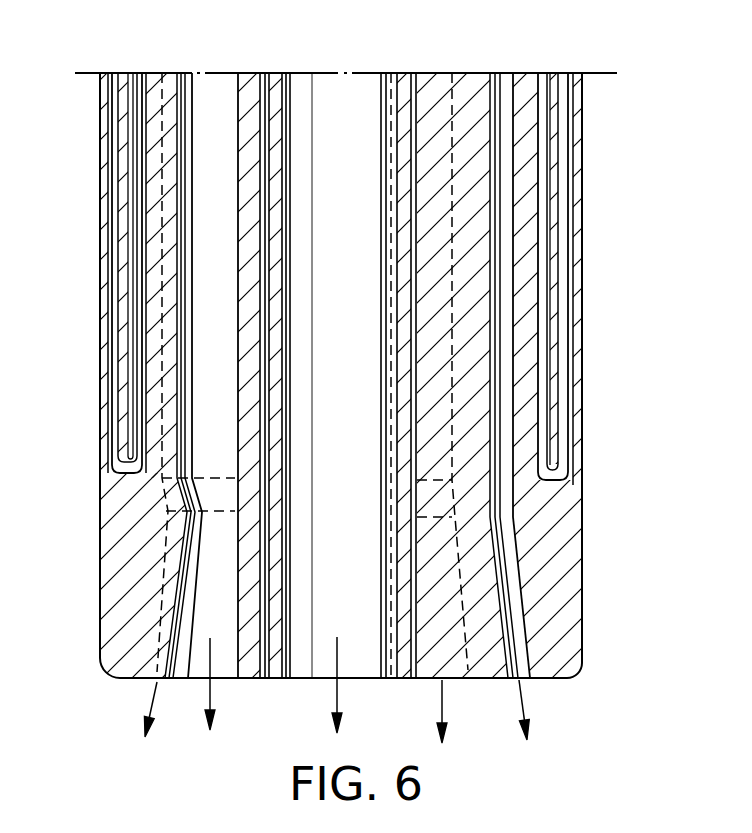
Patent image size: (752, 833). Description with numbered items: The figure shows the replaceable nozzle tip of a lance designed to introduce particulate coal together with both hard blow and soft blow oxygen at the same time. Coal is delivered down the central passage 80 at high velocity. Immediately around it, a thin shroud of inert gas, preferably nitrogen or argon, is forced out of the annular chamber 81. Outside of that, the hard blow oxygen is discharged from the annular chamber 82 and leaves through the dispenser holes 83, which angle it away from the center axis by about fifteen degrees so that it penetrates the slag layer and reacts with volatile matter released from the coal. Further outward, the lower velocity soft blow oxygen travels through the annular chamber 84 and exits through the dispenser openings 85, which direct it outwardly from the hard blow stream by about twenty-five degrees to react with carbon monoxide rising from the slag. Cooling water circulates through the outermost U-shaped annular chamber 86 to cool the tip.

The central passage 80 is at (368, 657).
The annular chamber 81 is at (262, 678).
The annular chamber 82 is at (217, 102).
The dispenser holes 83 is at (195, 668).
The annular chamber 84 is at (507, 93).
The dispenser openings 85 is at (523, 670).
The U-shaped annular chamber 86 is at (117, 80).